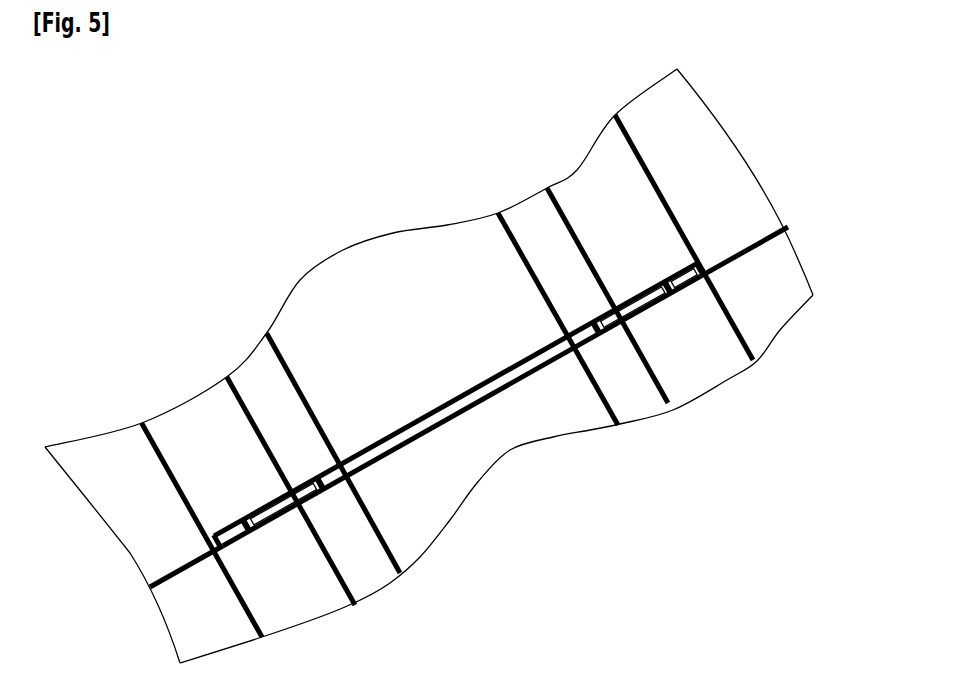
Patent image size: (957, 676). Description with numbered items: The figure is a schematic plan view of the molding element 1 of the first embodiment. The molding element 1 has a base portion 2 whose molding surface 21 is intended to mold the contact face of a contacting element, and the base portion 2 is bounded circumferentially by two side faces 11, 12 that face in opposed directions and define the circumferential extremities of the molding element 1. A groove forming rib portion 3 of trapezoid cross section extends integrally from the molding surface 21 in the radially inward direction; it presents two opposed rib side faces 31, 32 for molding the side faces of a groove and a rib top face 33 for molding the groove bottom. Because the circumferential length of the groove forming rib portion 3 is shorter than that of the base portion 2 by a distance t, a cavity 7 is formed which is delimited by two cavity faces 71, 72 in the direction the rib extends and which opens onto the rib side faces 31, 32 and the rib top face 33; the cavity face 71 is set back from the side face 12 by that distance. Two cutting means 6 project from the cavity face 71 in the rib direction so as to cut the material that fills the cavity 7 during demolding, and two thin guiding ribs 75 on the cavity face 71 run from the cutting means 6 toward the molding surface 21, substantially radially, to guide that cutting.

The molding element 1 is at (207, 277).
The base portion 2 is at (755, 120).
The groove forming rib portion 3 is at (347, 287).
The cutting means 6 is at (473, 397).
The cavity 7 is at (475, 490).
The side face 11 is at (744, 251).
The side face 12 is at (186, 566).
The molding surface 21 is at (666, 120).
The rib side face 31 is at (218, 435).
The rib side face 32 is at (587, 193).
The rib top face 33 is at (378, 350).
The cavity face 71 is at (458, 405).
The cavity face 72 is at (461, 410).
The guiding rib 75 is at (457, 406).